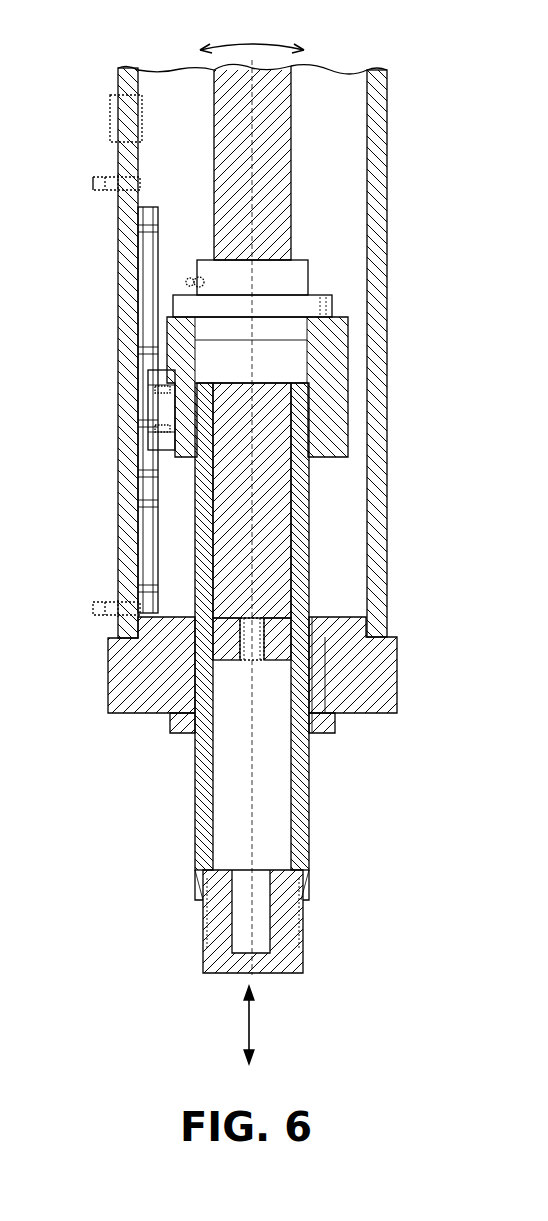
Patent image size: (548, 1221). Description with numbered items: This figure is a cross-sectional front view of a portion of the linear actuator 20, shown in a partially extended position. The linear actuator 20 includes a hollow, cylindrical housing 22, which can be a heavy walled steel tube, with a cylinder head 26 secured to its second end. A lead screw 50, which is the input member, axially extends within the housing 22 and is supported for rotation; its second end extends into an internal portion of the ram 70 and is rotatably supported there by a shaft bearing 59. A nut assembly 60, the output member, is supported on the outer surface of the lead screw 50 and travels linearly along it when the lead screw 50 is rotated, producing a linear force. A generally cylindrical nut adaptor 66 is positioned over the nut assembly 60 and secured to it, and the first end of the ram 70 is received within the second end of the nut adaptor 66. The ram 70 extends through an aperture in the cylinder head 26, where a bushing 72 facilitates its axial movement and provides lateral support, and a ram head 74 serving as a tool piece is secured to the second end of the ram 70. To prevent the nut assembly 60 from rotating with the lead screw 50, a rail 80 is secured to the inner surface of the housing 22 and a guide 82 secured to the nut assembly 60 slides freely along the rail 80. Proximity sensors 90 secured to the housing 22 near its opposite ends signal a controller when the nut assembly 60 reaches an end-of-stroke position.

The linear actuator 20 is at (390, 82).
The housing 22 is at (125, 372).
The cylinder head 26 is at (135, 675).
The lead screw 50 is at (230, 522).
The shaft bearing 59 is at (213, 640).
The nut assembly 60 is at (210, 270).
The nut adaptor 66 is at (175, 340).
The ram 70 is at (200, 790).
The bushing 72 is at (172, 722).
The ram head 74 is at (215, 960).
The rail 80 is at (155, 290).
The guide 82 is at (155, 415).
The proximity sensors 90 is at (93, 184).